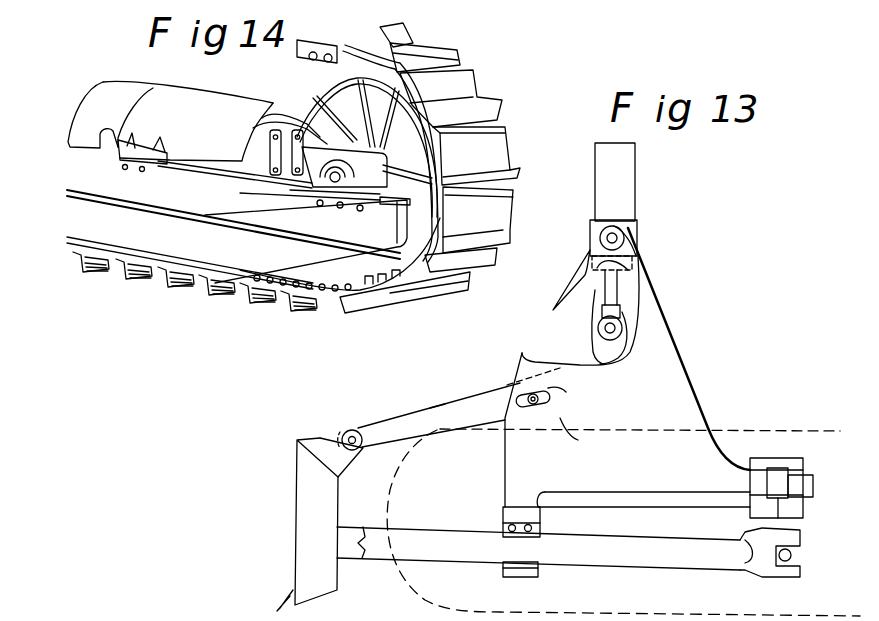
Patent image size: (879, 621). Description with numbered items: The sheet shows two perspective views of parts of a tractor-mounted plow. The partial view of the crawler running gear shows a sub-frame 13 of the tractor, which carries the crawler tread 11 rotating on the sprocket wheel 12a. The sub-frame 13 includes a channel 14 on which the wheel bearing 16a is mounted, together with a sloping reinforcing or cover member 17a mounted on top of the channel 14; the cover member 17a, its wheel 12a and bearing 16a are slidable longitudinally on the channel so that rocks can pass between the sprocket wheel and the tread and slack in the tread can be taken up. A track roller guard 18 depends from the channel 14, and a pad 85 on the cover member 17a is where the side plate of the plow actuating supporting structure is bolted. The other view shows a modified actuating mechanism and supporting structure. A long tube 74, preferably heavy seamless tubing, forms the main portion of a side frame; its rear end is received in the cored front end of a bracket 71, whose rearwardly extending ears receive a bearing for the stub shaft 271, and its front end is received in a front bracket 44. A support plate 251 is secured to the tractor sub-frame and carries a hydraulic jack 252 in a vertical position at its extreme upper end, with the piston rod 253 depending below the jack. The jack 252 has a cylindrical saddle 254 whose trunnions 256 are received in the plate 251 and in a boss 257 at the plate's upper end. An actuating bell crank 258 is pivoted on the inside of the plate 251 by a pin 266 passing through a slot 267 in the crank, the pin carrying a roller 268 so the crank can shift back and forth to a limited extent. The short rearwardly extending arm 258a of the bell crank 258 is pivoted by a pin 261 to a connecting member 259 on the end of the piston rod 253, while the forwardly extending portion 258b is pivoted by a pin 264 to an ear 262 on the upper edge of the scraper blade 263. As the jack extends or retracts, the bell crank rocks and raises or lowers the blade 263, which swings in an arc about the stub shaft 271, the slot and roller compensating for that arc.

In FIG. 14, the crawler tread 11 is at (420, 294).
In FIG. 14, the sprocket wheel 12a is at (322, 195).
In FIG. 14, the sub-frame 13 is at (117, 224).
In FIG. 14, the channel 14 is at (178, 193).
In FIG. 14, the wheel bearing 16a is at (352, 187).
In FIG. 14, the cover member 17a is at (220, 153).
In FIG. 14, the track roller guard 18 is at (403, 178).
In FIG. 14, the pad 85 is at (273, 155).
In FIG. 13, the bracket 44 is at (346, 549).
In FIG. 13, the bracket 71 is at (758, 562).
In FIG. 13, the tube 74 is at (563, 557).
In FIG. 13, the support plate 251 is at (670, 423).
In FIG. 13, the jack 252 is at (619, 183).
In FIG. 13, the piston rod 253 is at (611, 292).
In FIG. 13, the cylindrical saddle 254 is at (637, 228).
In FIG. 13, the trunnion 256 is at (602, 232).
In FIG. 13, the boss 257 is at (586, 256).
In FIG. 13, the actuating bell crank 258 is at (500, 396).
In FIG. 13, the rearwardly extending arm 258a is at (580, 358).
In FIG. 13, the forwardly extending portion 258b is at (436, 417).
In FIG. 13, the connecting member 259 is at (620, 312).
In FIG. 13, the pin 261 is at (624, 331).
In FIG. 13, the ear 262 is at (341, 447).
In FIG. 13, the scraper blade 263 is at (313, 471).
In FIG. 13, the pin 264 is at (355, 432).
In FIG. 13, the pin 266 is at (568, 435).
In FIG. 13, the slot 267 is at (560, 399).
In FIG. 13, the roller 268 is at (560, 388).
In FIG. 13, the stub shaft 271 is at (783, 561).